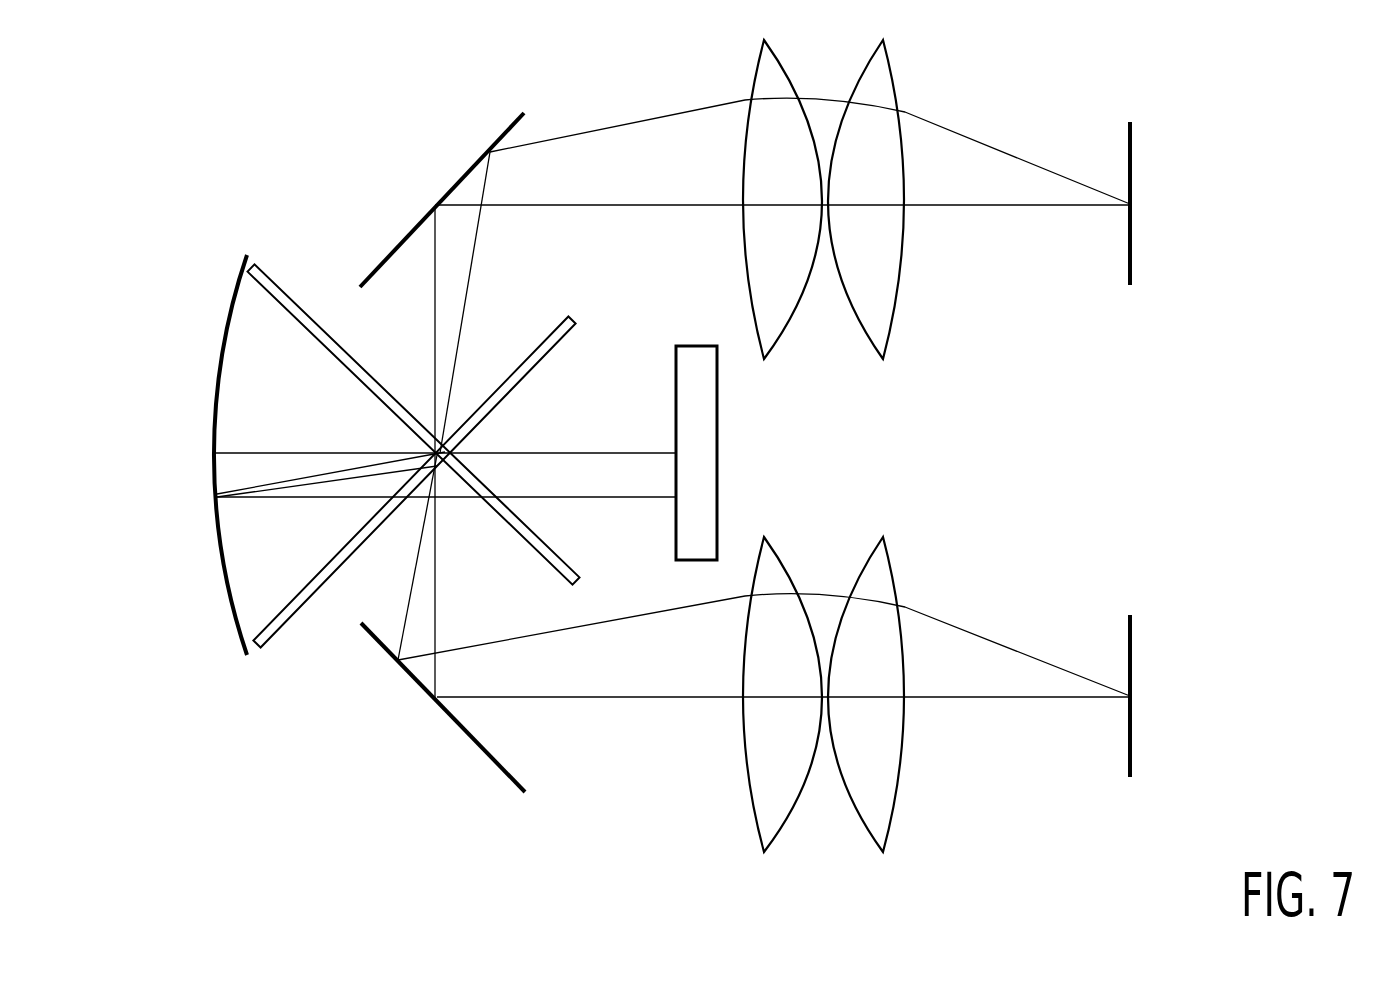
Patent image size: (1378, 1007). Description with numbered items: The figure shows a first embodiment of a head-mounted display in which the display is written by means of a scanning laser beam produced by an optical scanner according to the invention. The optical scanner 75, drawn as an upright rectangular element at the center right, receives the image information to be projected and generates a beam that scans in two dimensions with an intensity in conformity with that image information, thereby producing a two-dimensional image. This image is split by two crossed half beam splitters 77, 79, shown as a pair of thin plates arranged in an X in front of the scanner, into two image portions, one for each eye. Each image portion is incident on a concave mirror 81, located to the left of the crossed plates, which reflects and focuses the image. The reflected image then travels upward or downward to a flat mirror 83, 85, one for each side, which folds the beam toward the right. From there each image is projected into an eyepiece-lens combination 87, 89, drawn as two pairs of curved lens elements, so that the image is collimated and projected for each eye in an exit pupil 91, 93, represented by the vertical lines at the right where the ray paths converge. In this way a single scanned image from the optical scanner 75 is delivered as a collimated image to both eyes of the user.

The optical scanner 75 is at (714, 430).
The half beam splitter 77 is at (283, 290).
The half beam splitter 79 is at (303, 610).
The concave mirror 81 is at (223, 337).
The flat mirror 83 is at (455, 182).
The flat mirror 85 is at (450, 725).
The eyepiece-lens combination 87 is at (778, 343).
The eyepiece-lens combination 89 is at (778, 838).
The exit pupil 91 is at (1133, 175).
The exit pupil 93 is at (1133, 667).